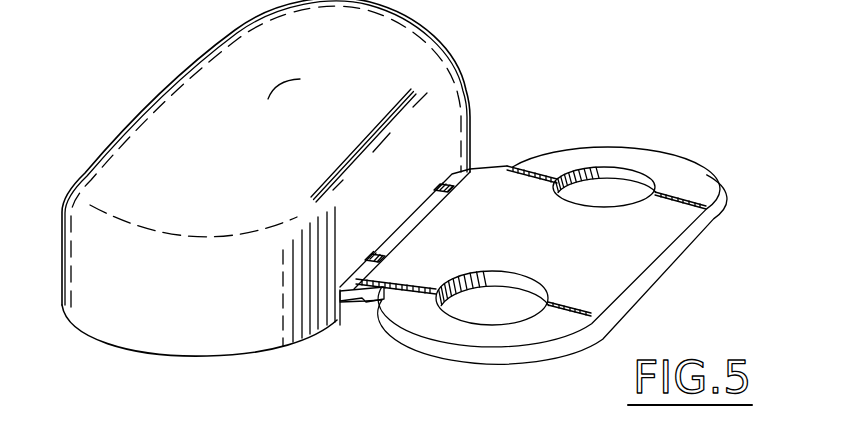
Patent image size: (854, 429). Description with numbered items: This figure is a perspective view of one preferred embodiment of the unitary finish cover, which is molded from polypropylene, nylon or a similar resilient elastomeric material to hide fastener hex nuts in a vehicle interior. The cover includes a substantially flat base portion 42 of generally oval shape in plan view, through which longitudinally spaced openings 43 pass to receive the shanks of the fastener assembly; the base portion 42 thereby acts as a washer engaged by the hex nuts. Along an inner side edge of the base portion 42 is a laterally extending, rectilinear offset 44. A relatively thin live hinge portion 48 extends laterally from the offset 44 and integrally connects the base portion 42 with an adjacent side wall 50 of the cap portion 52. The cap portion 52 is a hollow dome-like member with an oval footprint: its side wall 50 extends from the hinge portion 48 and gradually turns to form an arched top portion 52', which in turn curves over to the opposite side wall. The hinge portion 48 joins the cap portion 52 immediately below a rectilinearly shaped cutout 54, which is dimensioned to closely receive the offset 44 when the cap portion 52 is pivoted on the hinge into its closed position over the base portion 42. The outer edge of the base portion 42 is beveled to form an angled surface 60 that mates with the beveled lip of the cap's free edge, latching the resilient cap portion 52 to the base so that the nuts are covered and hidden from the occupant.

The base portion 42 is at (612, 256).
The opening 43 is at (514, 279).
The offset 44 is at (392, 268).
The live hinge portion 48 is at (418, 212).
The side wall 50 is at (408, 210).
The cap portion 52 is at (266, 178).
The top portion 52' is at (308, 80).
The cutout 54 is at (337, 305).
The angled surface 60 is at (693, 233).